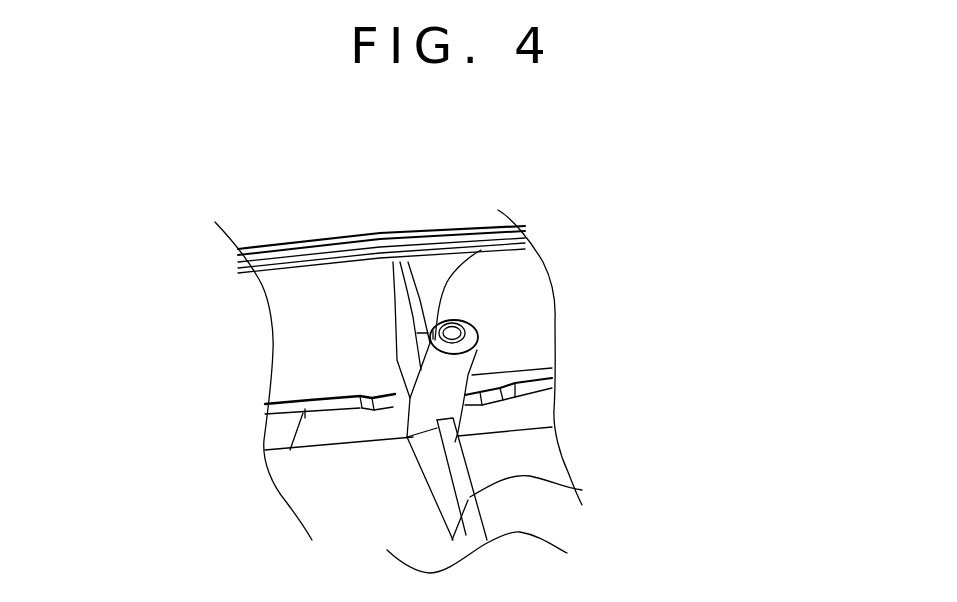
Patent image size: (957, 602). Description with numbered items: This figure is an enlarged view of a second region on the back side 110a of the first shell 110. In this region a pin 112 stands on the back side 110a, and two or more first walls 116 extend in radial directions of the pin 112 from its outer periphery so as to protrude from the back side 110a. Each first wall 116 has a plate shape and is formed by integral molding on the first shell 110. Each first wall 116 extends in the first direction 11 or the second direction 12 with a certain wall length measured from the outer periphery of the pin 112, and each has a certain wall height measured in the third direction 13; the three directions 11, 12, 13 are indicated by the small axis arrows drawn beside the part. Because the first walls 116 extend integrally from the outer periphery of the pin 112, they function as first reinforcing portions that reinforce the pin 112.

The first shell 110 is at (337, 240).
The back side 110a is at (303, 490).
The pin 112 is at (482, 249).
The first walls 116 is at (406, 322).
The first direction 11 is at (641, 350).
The second direction 12 is at (641, 350).
The third direction 13 is at (641, 350).